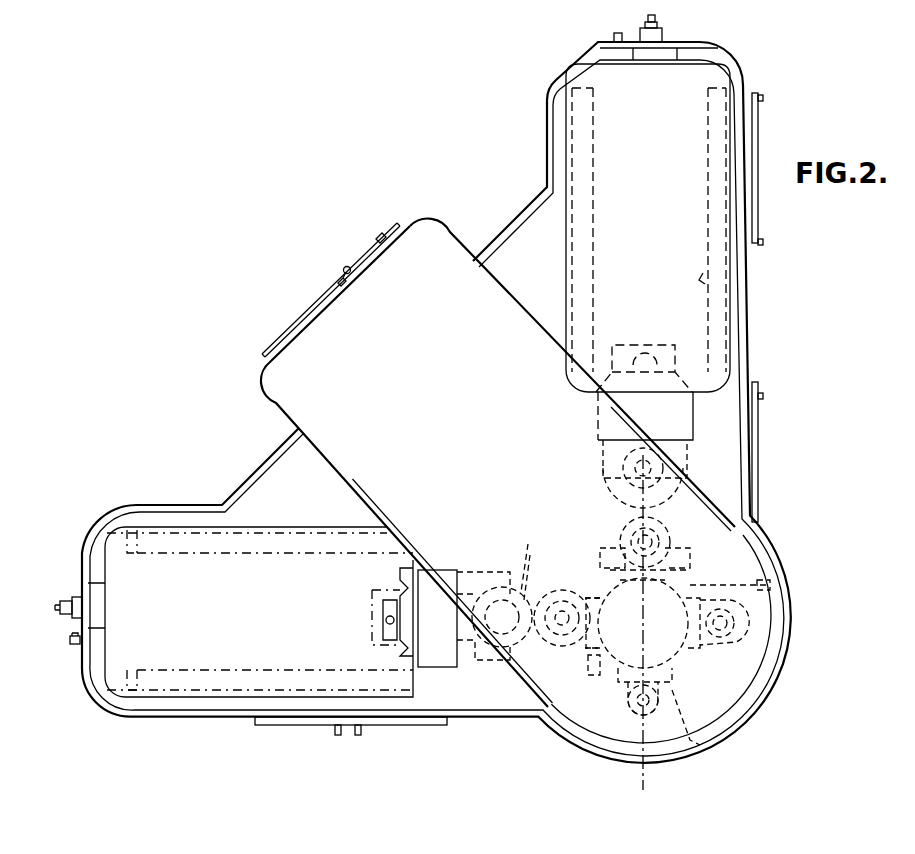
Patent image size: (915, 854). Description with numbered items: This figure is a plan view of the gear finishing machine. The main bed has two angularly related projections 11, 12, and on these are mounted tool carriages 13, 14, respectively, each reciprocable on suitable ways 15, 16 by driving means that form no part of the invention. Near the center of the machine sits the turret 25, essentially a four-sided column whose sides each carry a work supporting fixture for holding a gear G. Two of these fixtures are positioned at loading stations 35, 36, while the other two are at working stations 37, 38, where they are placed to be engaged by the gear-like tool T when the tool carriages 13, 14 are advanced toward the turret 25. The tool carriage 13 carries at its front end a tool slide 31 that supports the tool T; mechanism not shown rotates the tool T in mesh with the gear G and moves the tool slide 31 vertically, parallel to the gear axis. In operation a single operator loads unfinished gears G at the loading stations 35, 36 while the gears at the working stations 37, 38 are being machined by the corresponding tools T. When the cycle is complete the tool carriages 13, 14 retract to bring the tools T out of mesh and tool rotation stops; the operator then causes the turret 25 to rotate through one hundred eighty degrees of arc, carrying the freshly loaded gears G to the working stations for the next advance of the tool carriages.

The projection 11 is at (566, 130).
The projection 12 is at (154, 516).
The tool carriage 13 is at (698, 195).
The tool carriage 14 is at (196, 570).
The ways 15 is at (705, 283).
The ways 16 is at (255, 545).
The turret 25 is at (652, 590).
The tool slide 31 is at (448, 565).
The loading station 35 is at (755, 621).
The loading station 36 is at (616, 722).
The working station 37 is at (557, 660).
The working station 38 is at (694, 518).
The gear-like tool T is at (528, 561).
The gear G is at (562, 590).